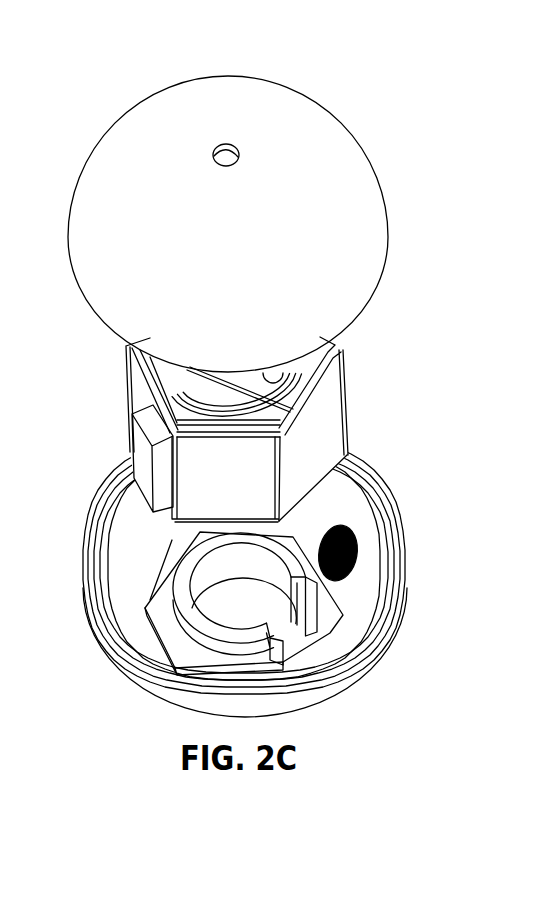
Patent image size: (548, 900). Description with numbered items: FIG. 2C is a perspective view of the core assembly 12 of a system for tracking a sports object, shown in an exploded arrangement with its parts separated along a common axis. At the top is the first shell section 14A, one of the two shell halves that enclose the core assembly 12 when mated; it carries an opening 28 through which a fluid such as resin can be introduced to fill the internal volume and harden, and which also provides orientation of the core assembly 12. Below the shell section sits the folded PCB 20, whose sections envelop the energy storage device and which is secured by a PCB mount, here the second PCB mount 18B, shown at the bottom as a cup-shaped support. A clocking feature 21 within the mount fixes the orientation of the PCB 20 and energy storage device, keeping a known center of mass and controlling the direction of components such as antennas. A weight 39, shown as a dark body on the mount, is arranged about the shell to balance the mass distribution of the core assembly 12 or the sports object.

The core assembly 12 is at (100, 80).
The first shell section 14A is at (70, 240).
The opening 28 is at (233, 142).
The PCB 20 is at (347, 401).
The second PCB mount 18B is at (342, 622).
The clocking feature 21 is at (298, 636).
The weight 39 is at (361, 537).